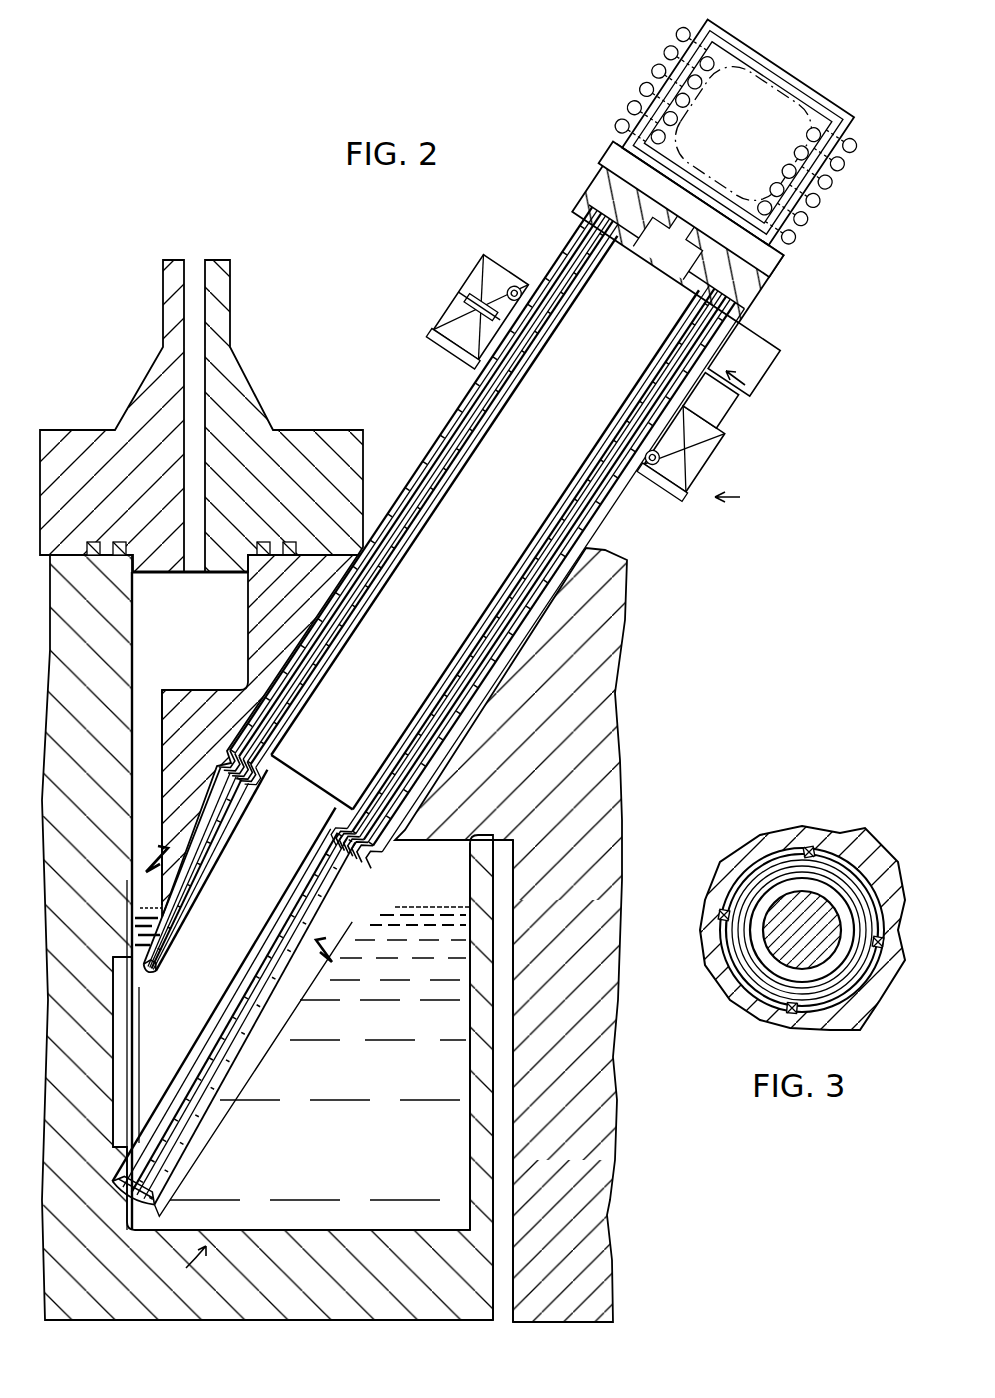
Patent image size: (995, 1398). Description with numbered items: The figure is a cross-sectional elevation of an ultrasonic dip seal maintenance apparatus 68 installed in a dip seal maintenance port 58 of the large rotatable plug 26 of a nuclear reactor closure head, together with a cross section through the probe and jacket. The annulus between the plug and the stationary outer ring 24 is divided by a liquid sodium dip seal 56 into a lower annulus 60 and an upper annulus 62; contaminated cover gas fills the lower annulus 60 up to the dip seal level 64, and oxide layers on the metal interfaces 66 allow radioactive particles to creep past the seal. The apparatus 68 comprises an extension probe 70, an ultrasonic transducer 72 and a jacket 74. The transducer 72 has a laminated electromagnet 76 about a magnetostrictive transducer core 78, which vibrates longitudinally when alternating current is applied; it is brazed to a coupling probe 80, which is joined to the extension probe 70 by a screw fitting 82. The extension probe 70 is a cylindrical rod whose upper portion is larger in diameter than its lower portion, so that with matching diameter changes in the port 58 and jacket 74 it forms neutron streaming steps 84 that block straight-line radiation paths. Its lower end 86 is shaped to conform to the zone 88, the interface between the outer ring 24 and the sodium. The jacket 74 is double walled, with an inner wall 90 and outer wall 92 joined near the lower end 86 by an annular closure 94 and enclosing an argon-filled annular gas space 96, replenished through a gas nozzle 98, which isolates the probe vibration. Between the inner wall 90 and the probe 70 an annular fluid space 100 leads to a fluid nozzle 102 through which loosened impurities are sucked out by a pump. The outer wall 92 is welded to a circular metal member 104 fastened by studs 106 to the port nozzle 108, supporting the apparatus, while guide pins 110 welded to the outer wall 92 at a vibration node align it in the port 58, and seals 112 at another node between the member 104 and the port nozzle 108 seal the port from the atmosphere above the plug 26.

In FIG. 2, the stationary outer ring 24 is at (98, 996).
In FIG. 2, the large rotatable plug 26 is at (576, 921).
In FIG. 3, the large rotatable plug 26 is at (862, 855).
In FIG. 2, the dip seal 56 is at (180, 1267).
In FIG. 2, the dip seal maintenance port 58 is at (344, 588).
In FIG. 2, the lower annulus 60 is at (504, 1250).
In FIG. 2, the upper annulus 62 is at (130, 648).
In FIG. 2, the dip seal level 64 is at (424, 905).
In FIG. 2, the interfaces 66 is at (124, 1170).
In FIG. 2, the ultrasonic dip seal maintenance apparatus 68 is at (747, 496).
In FIG. 2, the extension probe 70 is at (478, 517).
In FIG. 3, the extension probe 70 is at (815, 942).
In FIG. 2, the ultrasonic transducer 72 is at (738, 133).
In FIG. 2, the jacket 74 is at (753, 382).
In FIG. 2, the laminated electromagnet 76 is at (735, 136).
In FIG. 2, the transducer core 78 is at (743, 133).
In FIG. 2, the coupling probe 80 is at (691, 209).
In FIG. 2, the screw fitting 82 is at (677, 233).
In FIG. 2, the neutron streaming steps 84 is at (206, 989).
In FIG. 2, the lower end 86 is at (140, 1012).
In FIG. 2, the zone 88 is at (113, 1056).
In FIG. 2, the inner wall 90 is at (477, 535).
In FIG. 3, the inner wall 90 is at (760, 880).
In FIG. 2, the outer wall 92 is at (477, 534).
In FIG. 3, the outer wall 92 is at (790, 856).
In FIG. 2, the closure 94 is at (150, 1081).
In FIG. 3, the closure 94 is at (858, 952).
In FIG. 2, the annular gas space 96 is at (477, 534).
In FIG. 2, the gas nozzle 98 is at (710, 400).
In FIG. 2, the annular fluid space 100 is at (479, 537).
In FIG. 3, the annular fluid space 100 is at (768, 962).
In FIG. 2, the fluid nozzle 102 is at (744, 359).
In FIG. 2, the circular metal member 104 is at (584, 375).
In FIG. 2, the studs 106 is at (479, 306).
In FIG. 2, the port nozzle 108 is at (556, 414).
In FIG. 2, the guide pins 110 is at (146, 886).
In FIG. 3, the guide pins 110 is at (815, 848).
In FIG. 2, the seals 112 is at (583, 376).